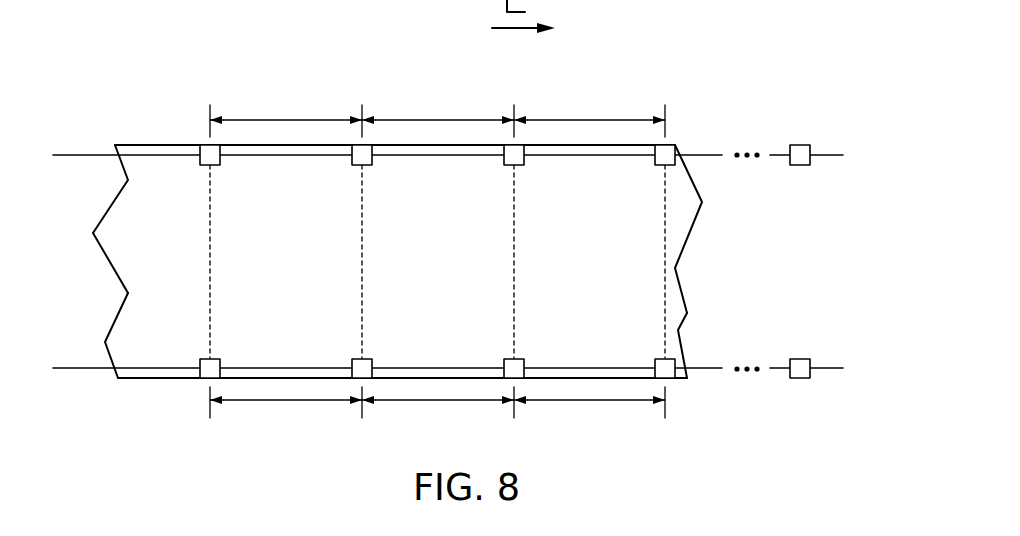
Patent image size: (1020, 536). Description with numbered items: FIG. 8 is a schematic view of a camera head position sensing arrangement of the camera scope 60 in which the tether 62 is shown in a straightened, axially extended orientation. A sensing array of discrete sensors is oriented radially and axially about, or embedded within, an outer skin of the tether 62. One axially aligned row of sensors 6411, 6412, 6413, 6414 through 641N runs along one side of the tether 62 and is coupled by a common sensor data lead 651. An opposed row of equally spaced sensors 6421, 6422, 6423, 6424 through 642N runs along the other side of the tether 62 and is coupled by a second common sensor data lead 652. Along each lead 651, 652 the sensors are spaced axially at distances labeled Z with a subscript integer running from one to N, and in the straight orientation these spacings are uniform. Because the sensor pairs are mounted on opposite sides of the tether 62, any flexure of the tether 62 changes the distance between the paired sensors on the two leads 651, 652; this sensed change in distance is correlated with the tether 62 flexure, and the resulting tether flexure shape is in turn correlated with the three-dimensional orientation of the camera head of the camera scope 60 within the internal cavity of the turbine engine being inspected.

The camera scope 60 is at (192, 452).
The tether 62 is at (155, 150).
The common sensor data lead 651 is at (103, 368).
The common sensor data lead 652 is at (78, 155).
The sensor 6411 is at (222, 362).
The sensor 6412 is at (365, 367).
The sensor 6413 is at (520, 367).
The sensor 6414 is at (684, 368).
The sensor 641N is at (807, 378).
The sensor 6421 is at (200, 147).
The sensor 6422 is at (366, 157).
The sensor 6423 is at (518, 157).
The sensor 6424 is at (668, 156).
The sensor 642N is at (793, 145).